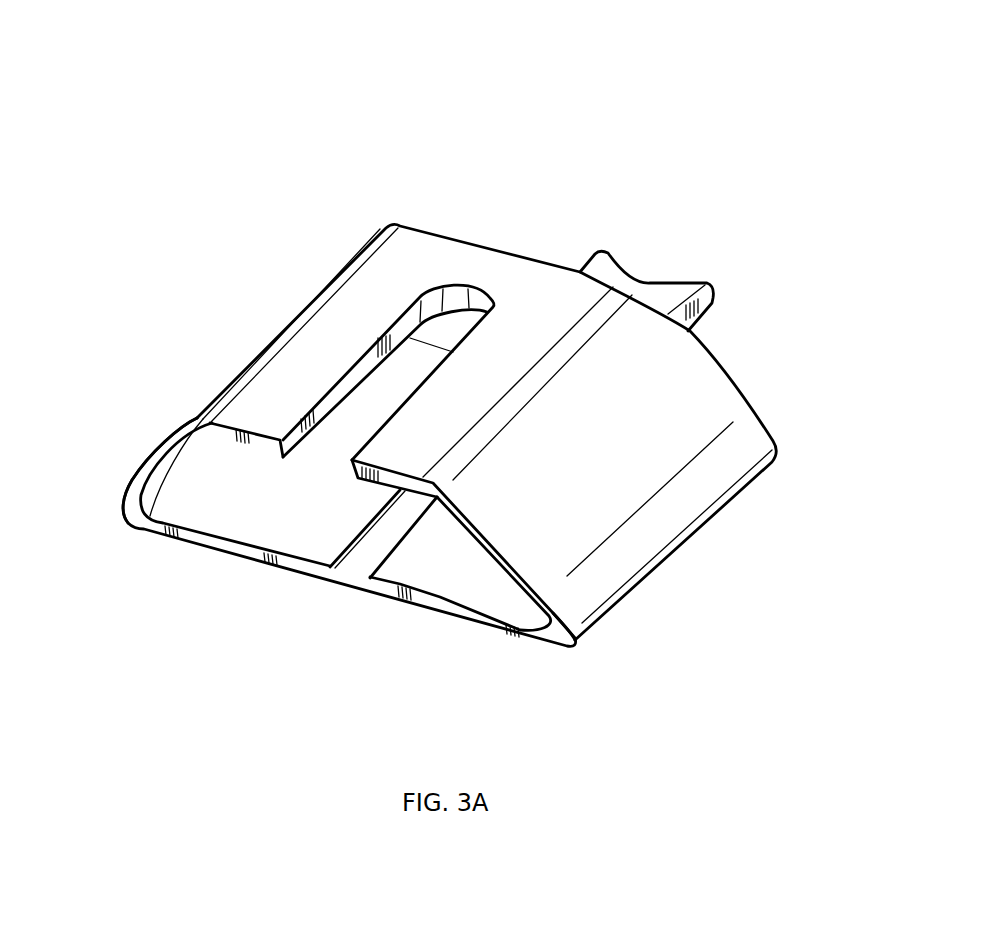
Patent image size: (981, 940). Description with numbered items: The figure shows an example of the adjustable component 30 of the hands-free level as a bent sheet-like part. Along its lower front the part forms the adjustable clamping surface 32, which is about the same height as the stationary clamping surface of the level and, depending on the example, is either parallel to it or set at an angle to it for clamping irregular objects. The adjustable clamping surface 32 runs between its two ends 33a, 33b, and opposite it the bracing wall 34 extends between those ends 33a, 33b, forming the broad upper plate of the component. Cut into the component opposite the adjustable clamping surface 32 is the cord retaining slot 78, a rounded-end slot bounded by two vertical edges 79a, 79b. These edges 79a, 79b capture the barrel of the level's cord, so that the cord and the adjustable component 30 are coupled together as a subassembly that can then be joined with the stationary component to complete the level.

The adjustable component 30 is at (664, 152).
The adjustable clamping surface 32 is at (308, 574).
The end of the adjustable clamping surface 33a is at (142, 537).
The end of the adjustable clamping surface 33b is at (567, 648).
The bracing wall 34 is at (327, 322).
The cord retaining slot 78 is at (398, 390).
The vertical edge 79a is at (330, 395).
The vertical edge 79b is at (423, 380).